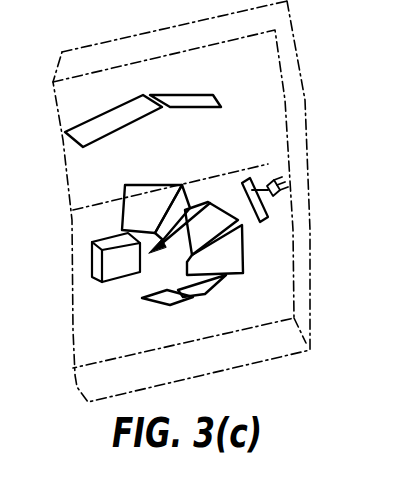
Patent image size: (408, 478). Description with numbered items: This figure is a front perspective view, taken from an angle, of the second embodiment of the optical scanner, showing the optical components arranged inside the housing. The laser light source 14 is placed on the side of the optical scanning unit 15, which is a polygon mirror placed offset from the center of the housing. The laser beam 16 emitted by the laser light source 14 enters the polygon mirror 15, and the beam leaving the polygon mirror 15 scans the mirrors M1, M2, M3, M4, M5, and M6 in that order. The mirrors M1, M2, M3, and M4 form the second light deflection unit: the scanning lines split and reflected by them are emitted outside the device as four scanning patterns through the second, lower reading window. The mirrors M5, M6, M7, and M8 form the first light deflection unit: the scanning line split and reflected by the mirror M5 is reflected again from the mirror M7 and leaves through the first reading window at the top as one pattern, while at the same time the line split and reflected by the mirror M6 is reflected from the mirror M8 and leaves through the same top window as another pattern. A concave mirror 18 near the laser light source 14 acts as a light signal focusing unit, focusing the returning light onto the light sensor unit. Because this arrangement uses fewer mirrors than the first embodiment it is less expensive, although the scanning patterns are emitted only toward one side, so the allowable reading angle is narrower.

The mirror M1 is at (174, 293).
The mirror M2 is at (206, 283).
The mirror M3 is at (225, 258).
The mirror M4 is at (210, 200).
The mirror M5 is at (180, 196).
The mirror M6 is at (153, 200).
The mirror M7 is at (107, 116).
The mirror M8 is at (187, 96).
The laser light source 14 is at (272, 180).
The optical scanning unit (polygon mirror) 15 is at (116, 280).
The laser beam 16 is at (188, 228).
The concave mirror 18 is at (269, 214).